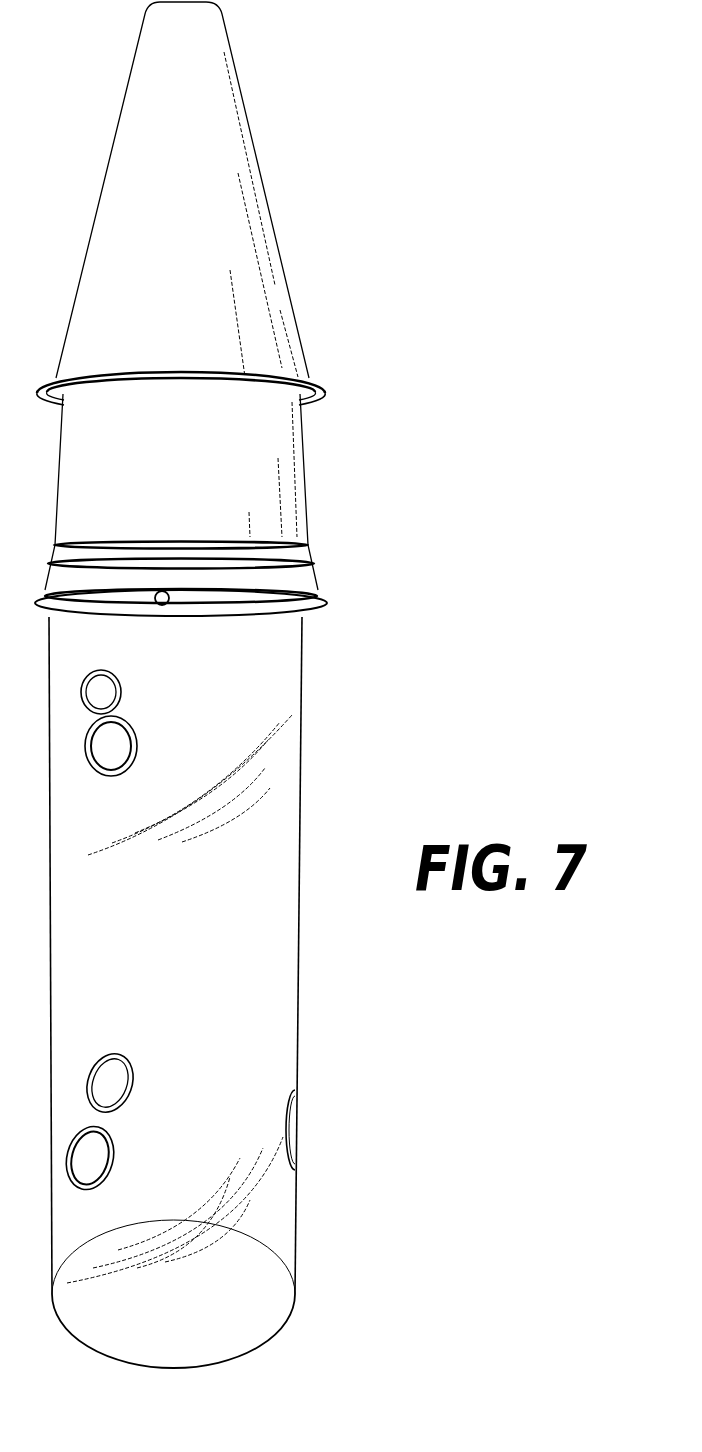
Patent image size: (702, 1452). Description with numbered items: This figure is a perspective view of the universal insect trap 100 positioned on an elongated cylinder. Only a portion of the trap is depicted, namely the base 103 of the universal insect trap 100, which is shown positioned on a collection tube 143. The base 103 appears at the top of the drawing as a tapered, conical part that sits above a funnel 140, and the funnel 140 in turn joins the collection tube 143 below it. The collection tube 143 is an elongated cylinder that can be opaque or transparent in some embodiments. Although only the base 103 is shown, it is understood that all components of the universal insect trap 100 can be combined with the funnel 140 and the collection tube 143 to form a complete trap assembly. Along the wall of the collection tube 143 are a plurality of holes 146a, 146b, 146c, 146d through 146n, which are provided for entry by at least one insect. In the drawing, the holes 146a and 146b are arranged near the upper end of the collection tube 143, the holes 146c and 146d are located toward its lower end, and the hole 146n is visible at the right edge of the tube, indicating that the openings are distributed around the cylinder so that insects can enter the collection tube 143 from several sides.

The universal insect trap 100 is at (322, 139).
The base 103 is at (273, 228).
The funnel 140 is at (303, 455).
The collection tube 143 is at (297, 951).
The hole 146a is at (137, 740).
The hole 146b is at (121, 686).
The hole 146c is at (132, 1072).
The hole 146d is at (112, 1138).
The hole 146n is at (297, 1118).